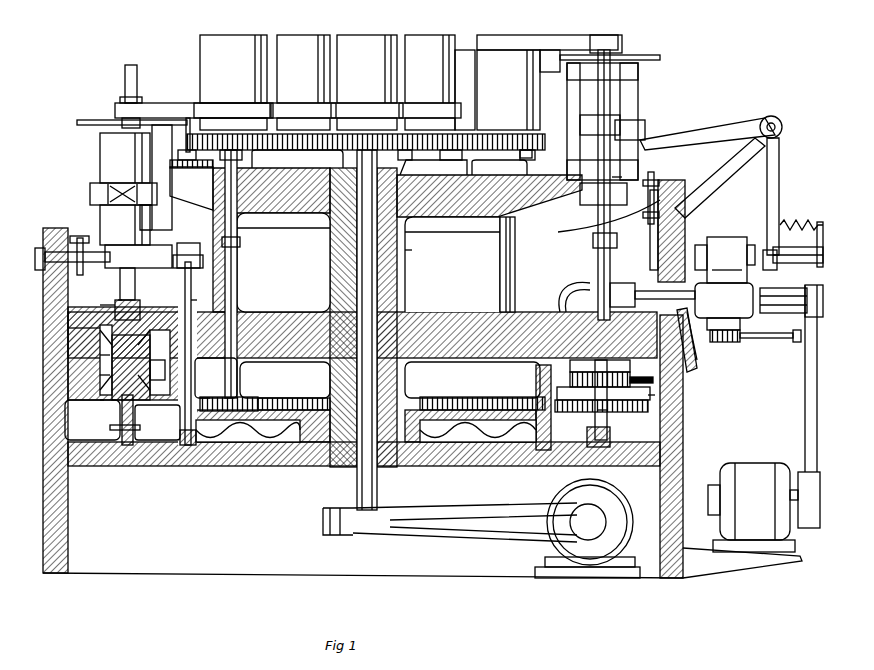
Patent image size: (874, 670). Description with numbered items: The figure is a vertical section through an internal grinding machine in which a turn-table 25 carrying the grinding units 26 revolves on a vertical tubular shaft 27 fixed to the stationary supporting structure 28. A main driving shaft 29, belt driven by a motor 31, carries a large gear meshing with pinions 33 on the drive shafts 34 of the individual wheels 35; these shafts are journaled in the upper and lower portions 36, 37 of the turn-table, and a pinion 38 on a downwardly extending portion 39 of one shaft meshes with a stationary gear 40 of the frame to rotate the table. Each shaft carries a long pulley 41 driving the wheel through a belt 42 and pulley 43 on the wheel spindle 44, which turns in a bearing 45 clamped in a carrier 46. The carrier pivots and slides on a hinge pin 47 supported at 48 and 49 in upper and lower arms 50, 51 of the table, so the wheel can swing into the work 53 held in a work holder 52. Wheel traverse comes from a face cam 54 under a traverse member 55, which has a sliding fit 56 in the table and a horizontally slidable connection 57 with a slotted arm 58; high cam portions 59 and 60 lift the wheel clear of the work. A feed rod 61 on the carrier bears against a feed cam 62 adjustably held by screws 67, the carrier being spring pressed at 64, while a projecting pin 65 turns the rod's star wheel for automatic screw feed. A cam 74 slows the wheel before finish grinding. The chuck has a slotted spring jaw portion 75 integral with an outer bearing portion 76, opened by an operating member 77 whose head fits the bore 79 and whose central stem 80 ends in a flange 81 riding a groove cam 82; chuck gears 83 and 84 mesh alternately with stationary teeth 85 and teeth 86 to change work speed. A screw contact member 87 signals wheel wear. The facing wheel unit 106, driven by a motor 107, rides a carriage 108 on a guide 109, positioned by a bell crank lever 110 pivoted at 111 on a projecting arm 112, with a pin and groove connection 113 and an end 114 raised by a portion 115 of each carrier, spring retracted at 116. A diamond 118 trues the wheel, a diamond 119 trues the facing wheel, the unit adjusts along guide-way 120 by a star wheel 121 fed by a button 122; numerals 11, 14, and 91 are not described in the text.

The valve body 11 is at (125, 365).
The valve seat 14 is at (120, 300).
The turn-table 25 is at (422, 312).
The grinding units 26 is at (108, 304).
The vertical tubular shaft 27 is at (357, 258).
The stationary supporting structure 28 is at (300, 467).
The main driving shaft 29 is at (405, 250).
The motor 31 is at (610, 550).
The pinions 33 is at (218, 141).
The drive shafts 34 is at (237, 262).
The wheel 35 is at (140, 310).
The upper portion of the turn-table 36 is at (280, 198).
The lower portion of the turn-table 37 is at (262, 360).
The pinion 38 is at (207, 389).
The downwardly extending portion 39 is at (236, 397).
The stationary gear 40 is at (236, 445).
The long pulley 41 is at (377, 82).
The belt 42 is at (170, 103).
The pulley 43 is at (123, 96).
The wheel spindle 44 is at (103, 125).
The bearing 45 is at (123, 189).
The carrier 46 is at (165, 205).
The hinge pin 47 is at (136, 66).
The upper support of hinge pin 48 is at (638, 73).
The lower support of hinge pin 49 is at (618, 178).
The upper arm of the turn-table 50 is at (605, 68).
The lower arm of the turn-table 51 is at (590, 205).
The work holder 52 is at (300, 163).
The work 53 is at (574, 297).
The face cam 54 is at (192, 446).
The traverse member 55 is at (216, 378).
The sliding fit 56 is at (242, 312).
The horizontally slidable connection 57 is at (200, 252).
The arm 58 is at (188, 247).
The high portion of face cam 59 is at (538, 396).
The high portion of face cam 60 is at (624, 290).
The feed rod 61 is at (68, 250).
The feed cam 62 is at (86, 250).
The spring 64 is at (191, 185).
The projecting pin 65 is at (658, 190).
The screws 67 is at (40, 250).
The cam 74 is at (158, 372).
The slotted spring jaw portion 75 is at (100, 328).
The outer bearing portion 76 is at (100, 355).
The ejector or chuck operating member 77 is at (100, 375).
The bore 79 is at (102, 400).
The central stem 80 is at (134, 415).
The flange 81 is at (120, 430).
The groove cam 82 is at (556, 432).
The larger gear 83 is at (690, 410).
The smaller gear 84 is at (655, 395).
The stationary teeth 85 is at (292, 398).
The gear teeth 86 is at (655, 380).
The screw contact member 87 is at (188, 118).
The link 91 is at (192, 300).
The facing wheel unit 106 is at (759, 306).
The motor 107 is at (764, 418).
The carriage 108 is at (727, 243).
The supporting guide 109 is at (798, 244).
The bell crank lever 110 is at (726, 170).
The pivot 111 is at (780, 120).
The projecting arm 112 is at (732, 168).
The pin and groove connection 113 is at (776, 262).
The end of bell crank lever 114 is at (700, 132).
The portion of wheel carrier 115 is at (748, 334).
The spring retraction 116 is at (612, 266).
The diamond 118 is at (138, 272).
The diamond 119 is at (700, 356).
The guide-way 120 is at (727, 265).
The star wheel 121 is at (760, 338).
The button 122 is at (795, 343).